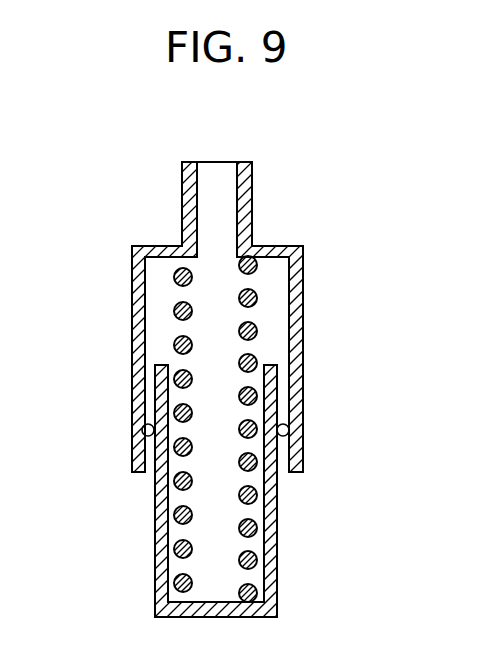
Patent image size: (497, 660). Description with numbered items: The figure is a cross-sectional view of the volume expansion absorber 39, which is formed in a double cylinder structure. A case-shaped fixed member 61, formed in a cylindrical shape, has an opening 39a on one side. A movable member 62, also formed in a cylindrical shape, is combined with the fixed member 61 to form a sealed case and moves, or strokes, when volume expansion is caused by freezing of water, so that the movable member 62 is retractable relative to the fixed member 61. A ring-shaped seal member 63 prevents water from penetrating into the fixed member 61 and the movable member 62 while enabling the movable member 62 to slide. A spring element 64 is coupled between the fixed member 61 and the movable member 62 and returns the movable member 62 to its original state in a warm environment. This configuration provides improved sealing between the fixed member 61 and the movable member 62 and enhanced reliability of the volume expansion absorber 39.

The volume expansion absorber 39 is at (318, 213).
The opening 39a is at (215, 162).
The fixed member 61 is at (303, 290).
The movable member 62 is at (157, 532).
The seal member 63 is at (148, 430).
The spring element 64 is at (183, 312).